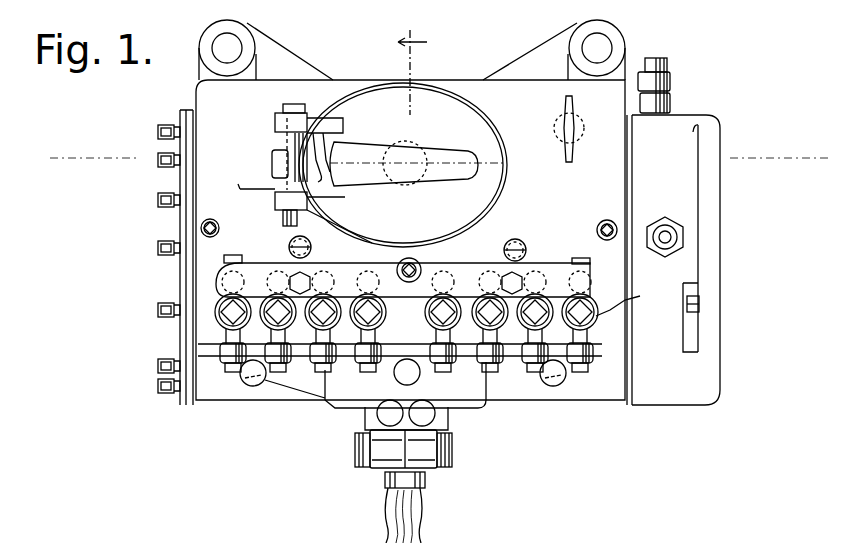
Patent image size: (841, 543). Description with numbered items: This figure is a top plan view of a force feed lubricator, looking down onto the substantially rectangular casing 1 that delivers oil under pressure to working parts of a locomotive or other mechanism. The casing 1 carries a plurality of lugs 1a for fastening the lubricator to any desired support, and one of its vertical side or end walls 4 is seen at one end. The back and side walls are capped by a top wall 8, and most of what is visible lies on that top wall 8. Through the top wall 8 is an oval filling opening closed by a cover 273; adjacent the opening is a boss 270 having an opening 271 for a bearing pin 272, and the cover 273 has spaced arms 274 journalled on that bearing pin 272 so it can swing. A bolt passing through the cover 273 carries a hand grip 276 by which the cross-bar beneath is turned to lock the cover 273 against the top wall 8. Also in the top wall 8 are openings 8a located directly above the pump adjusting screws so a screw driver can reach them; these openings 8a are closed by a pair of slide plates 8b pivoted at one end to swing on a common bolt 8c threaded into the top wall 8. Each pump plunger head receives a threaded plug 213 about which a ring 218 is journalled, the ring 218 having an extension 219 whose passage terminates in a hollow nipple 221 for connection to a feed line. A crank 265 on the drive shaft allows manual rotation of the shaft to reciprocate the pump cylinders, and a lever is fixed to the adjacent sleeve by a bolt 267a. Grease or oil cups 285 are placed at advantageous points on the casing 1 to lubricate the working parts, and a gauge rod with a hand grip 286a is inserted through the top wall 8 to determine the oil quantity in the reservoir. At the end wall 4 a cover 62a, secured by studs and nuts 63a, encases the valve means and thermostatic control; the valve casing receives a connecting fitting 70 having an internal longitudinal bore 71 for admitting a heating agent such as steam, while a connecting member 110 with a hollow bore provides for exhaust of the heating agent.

The casing 1 is at (604, 404).
The lugs 1a is at (200, 50).
The side or end wall 4 is at (419, 72).
The top wall 8 is at (195, 176).
The openings 8a is at (216, 283).
The slide plates 8b is at (346, 268).
The common bolt 8c is at (418, 266).
The cover 62a is at (700, 372).
The studs and nuts 63a is at (700, 300).
The connecting fitting 70 is at (682, 238).
The internal longitudinal bore 71 is at (670, 232).
The connecting member 110 is at (670, 80).
The plug 213 is at (374, 318).
The ring 218 is at (634, 299).
The extension 219 is at (340, 355).
The hollow nipple 221 is at (385, 380).
The crank 265 is at (418, 512).
The bolt 267a is at (448, 449).
The boss 270 is at (292, 142).
The opening 271 is at (285, 188).
The bearing pin 272 is at (283, 224).
The cover 273 is at (465, 210).
The spaced arms 274 is at (275, 112).
The hand grip 276 is at (440, 174).
The grease or oil cups 285 is at (412, 378).
The hand grip 286a is at (572, 150).